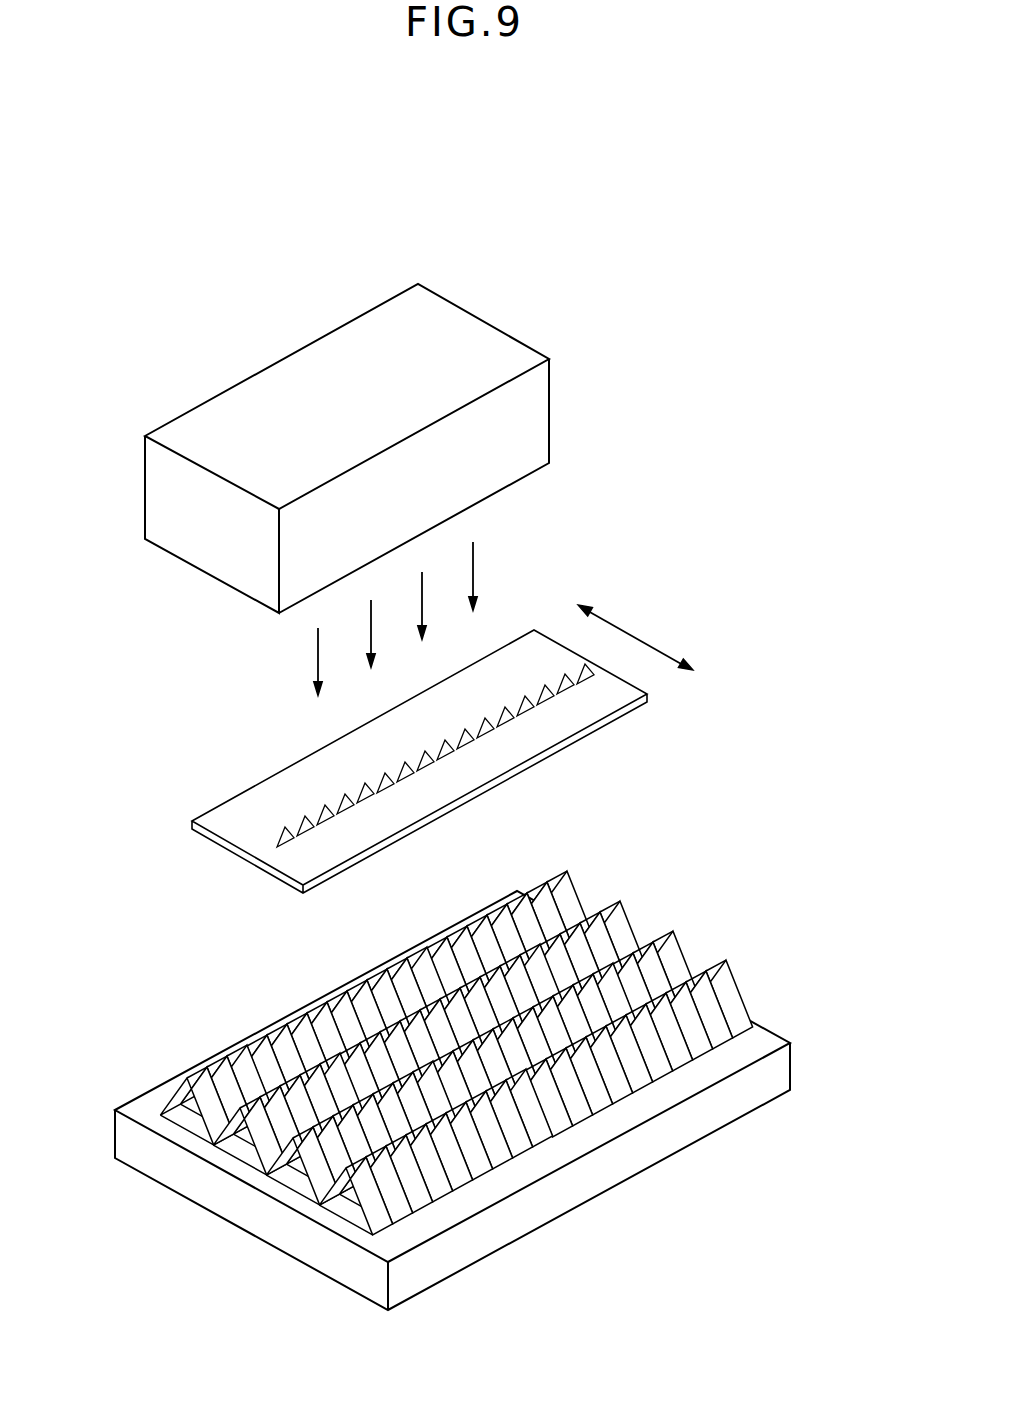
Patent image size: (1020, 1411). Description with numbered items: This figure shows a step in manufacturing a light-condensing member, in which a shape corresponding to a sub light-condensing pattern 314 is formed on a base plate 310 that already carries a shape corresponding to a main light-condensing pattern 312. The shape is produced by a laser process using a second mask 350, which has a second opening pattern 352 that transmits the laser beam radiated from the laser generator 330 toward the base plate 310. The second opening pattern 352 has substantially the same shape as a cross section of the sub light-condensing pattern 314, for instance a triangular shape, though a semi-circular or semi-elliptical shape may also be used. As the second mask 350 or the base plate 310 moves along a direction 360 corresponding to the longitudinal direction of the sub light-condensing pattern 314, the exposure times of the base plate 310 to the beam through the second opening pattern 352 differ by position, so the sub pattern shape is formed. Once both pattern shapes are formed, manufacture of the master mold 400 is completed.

The base plate 310 is at (452, 1098).
The main light-condensing pattern 312 is at (336, 1213).
The sub light-condensing pattern 314 is at (377, 1213).
The laser generator 330 is at (183, 533).
The second mask 350 is at (419, 761).
The second opening pattern 352 is at (280, 828).
The direction 360 is at (640, 637).
The master mold 400 is at (452, 1098).